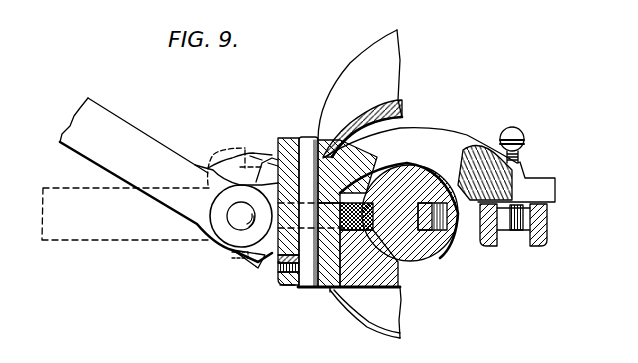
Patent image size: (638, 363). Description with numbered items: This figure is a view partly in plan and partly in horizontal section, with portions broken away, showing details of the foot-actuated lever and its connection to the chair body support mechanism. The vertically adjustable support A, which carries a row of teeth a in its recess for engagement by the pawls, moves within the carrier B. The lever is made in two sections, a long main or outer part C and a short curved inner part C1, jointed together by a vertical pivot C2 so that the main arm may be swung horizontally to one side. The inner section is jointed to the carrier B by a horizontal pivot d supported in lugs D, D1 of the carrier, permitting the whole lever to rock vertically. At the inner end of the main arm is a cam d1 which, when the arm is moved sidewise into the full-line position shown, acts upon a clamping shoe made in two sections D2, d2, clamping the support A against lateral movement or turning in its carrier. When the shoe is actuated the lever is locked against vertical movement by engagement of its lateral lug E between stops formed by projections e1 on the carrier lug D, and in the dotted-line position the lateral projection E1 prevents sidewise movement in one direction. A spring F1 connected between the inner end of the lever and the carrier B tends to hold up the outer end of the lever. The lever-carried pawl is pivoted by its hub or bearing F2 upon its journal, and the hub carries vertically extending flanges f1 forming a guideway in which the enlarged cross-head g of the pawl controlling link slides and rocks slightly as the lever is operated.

The support A is at (440, 258).
The teeth a is at (437, 216).
The carrier B is at (401, 282).
The main or outer part of lever C is at (157, 180).
The short curved inner part of lever C1 is at (432, 142).
The vertical pivot C2 is at (238, 218).
The carrier lug D is at (288, 137).
The carrier lug D1 is at (289, 272).
The clamping shoe section D2 is at (262, 258).
The horizontal pivot d is at (310, 138).
The cam d1 is at (276, 160).
The clamping shoe section d2 is at (333, 290).
The lateral lug E is at (243, 135).
The projection e1 is at (256, 150).
The lateral projection E1 is at (238, 255).
The spring F1 is at (523, 132).
The hub or bearing F2 is at (513, 235).
The flanges or projections f1 is at (548, 233).
The cross-head g is at (505, 222).